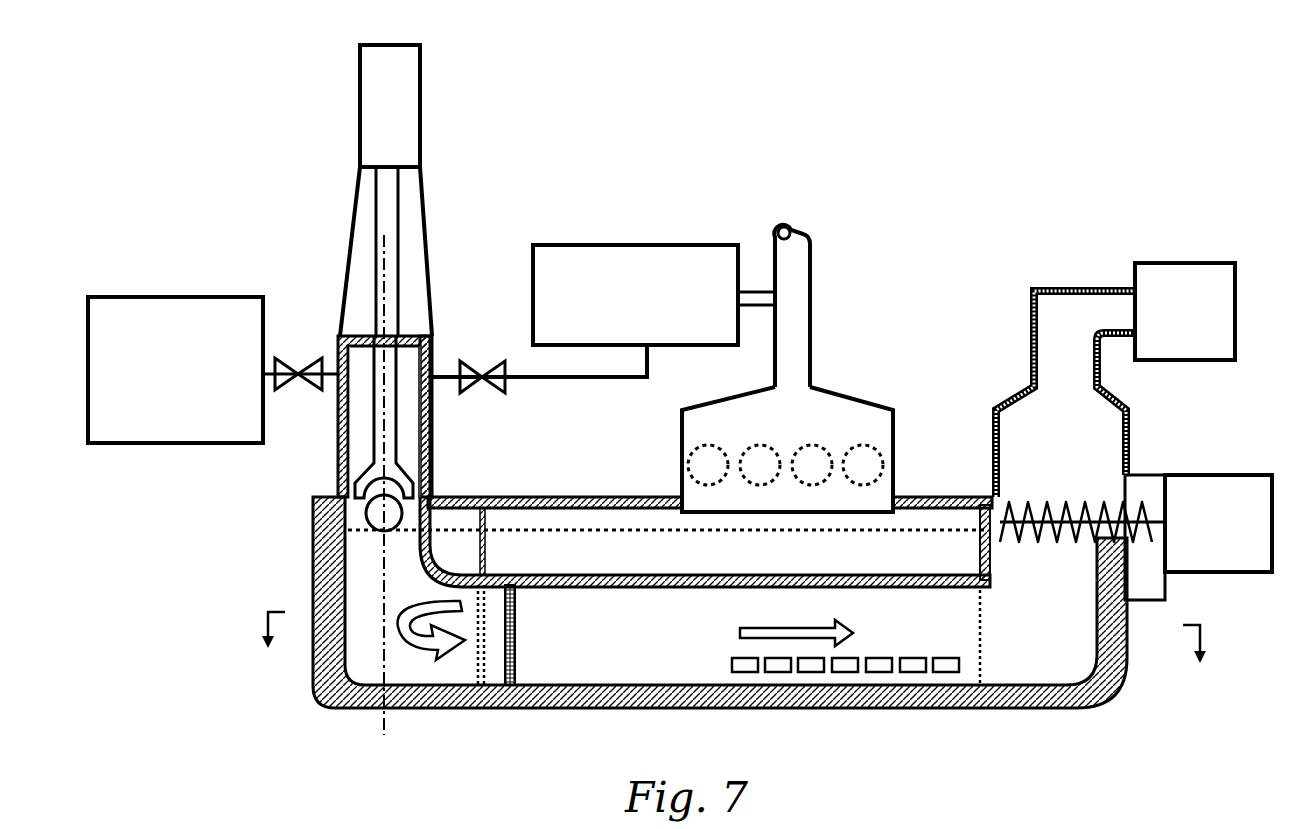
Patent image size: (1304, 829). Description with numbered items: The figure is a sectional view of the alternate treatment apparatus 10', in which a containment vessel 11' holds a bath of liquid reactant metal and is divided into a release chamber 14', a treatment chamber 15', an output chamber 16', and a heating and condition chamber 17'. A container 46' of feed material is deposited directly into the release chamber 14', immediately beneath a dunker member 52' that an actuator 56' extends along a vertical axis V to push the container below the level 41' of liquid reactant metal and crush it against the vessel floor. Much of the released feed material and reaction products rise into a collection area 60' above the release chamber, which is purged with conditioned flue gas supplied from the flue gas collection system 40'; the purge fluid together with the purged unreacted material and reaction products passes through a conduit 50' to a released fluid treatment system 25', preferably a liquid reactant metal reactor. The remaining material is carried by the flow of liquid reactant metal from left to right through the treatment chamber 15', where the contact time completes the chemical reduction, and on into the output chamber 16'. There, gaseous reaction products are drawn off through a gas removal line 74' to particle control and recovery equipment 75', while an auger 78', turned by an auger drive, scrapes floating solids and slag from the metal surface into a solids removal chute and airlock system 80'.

The alternate treatment apparatus 10' is at (217, 64).
The actuator 56' is at (353, 190).
The released fluid treatment system 25' is at (213, 348).
The conduit 50' is at (467, 411).
The dunker member 52' is at (345, 417).
The collection area 60' is at (347, 421).
The containment vessel 11' is at (687, 499).
The container 46' is at (329, 529).
The release chamber 14' is at (692, 602).
The flue gas collection system 40' is at (713, 358).
The heating and condition chamber 17' is at (705, 461).
The level of liquid reactant metal 41' is at (666, 545).
The treatment chamber 15' is at (800, 646).
The output chamber 16' is at (1043, 617).
The gas removal line 74' is at (1065, 394).
The particle control and recovery equipment 75' is at (1185, 290).
The auger 78' is at (1136, 515).
The solids removal chute and airlock system 80' is at (1198, 641).